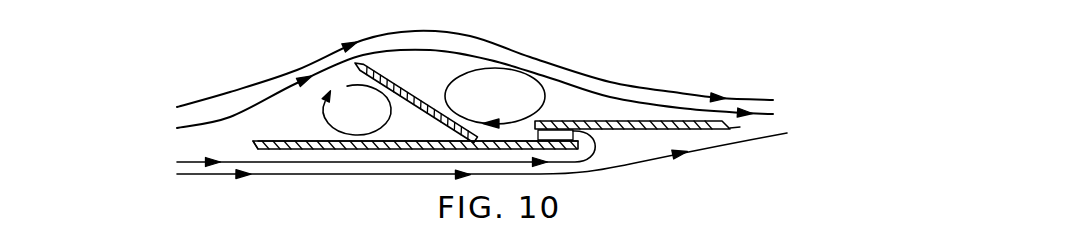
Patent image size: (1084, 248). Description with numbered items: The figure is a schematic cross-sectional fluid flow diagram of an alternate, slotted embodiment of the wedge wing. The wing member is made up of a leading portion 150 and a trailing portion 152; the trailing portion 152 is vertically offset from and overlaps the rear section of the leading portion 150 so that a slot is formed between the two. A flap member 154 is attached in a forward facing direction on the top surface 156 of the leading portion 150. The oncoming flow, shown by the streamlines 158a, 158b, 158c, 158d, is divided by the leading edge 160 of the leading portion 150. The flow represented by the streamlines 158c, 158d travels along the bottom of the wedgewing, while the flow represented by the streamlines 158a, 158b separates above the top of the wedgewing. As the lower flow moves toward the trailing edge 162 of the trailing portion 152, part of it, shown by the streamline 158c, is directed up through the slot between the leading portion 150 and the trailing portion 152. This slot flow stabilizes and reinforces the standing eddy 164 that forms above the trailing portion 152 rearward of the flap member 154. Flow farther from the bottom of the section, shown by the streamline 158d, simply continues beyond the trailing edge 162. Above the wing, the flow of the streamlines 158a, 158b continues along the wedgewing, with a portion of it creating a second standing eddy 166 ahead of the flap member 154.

The leading portion 150 is at (364, 155).
The trailing portion 152 is at (645, 130).
The flap member 154 is at (382, 87).
The top surface 156 is at (383, 140).
The streamline 158a is at (222, 93).
The streamline 158b is at (322, 66).
The streamline 158c is at (192, 161).
The streamline 158d is at (202, 175).
The leading edge 160 is at (253, 142).
The trailing edge 162 is at (730, 128).
The standing eddy 164 is at (545, 98).
The standing eddy 166 is at (320, 114).